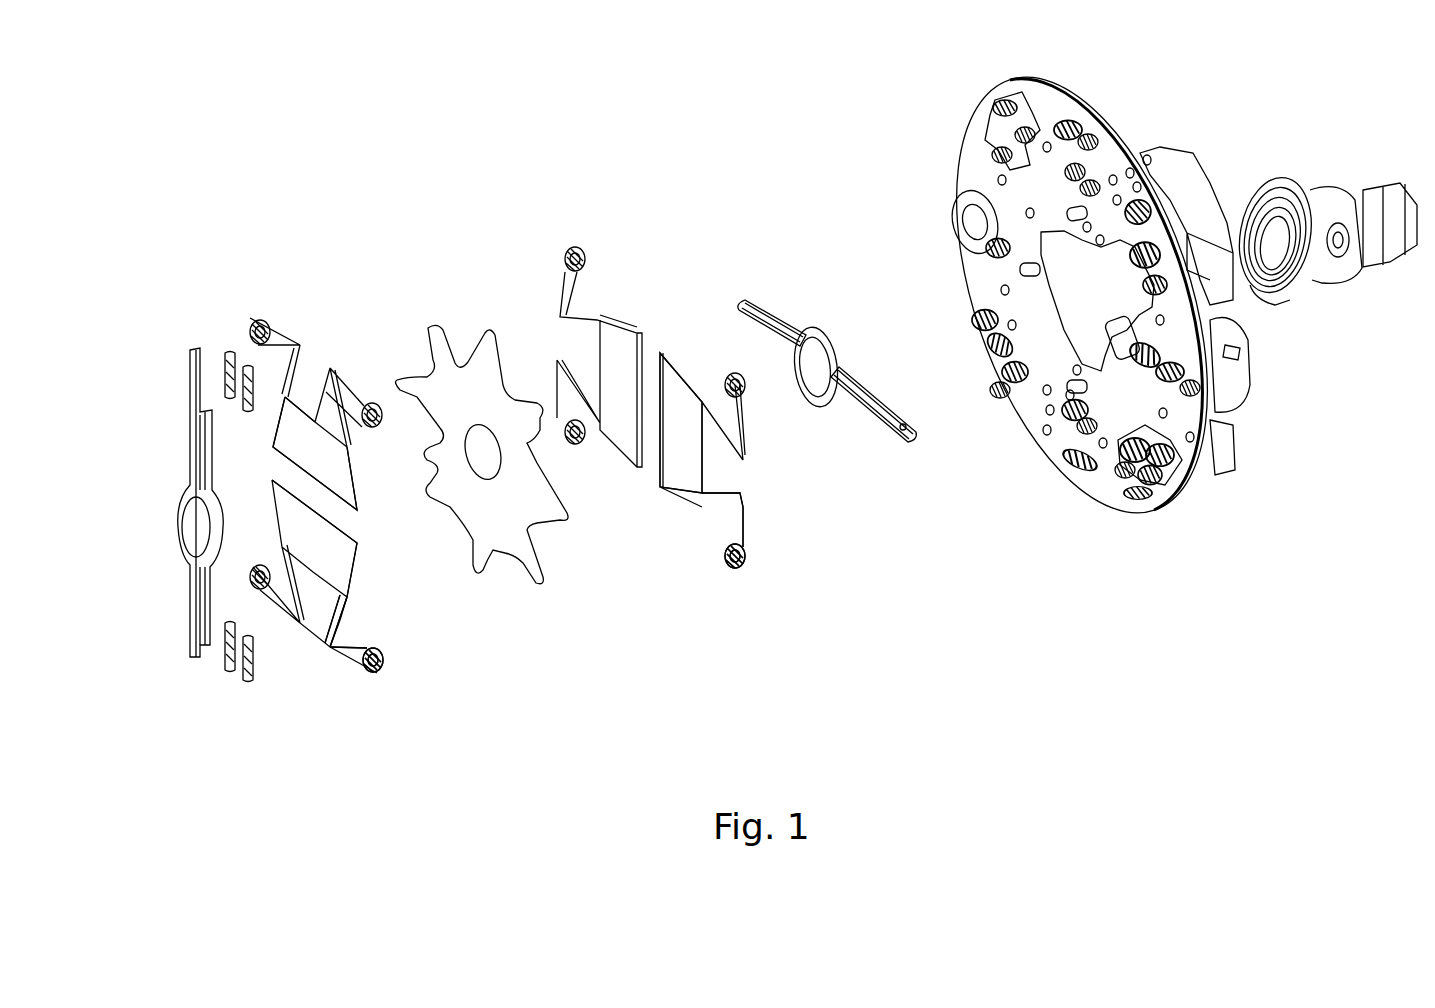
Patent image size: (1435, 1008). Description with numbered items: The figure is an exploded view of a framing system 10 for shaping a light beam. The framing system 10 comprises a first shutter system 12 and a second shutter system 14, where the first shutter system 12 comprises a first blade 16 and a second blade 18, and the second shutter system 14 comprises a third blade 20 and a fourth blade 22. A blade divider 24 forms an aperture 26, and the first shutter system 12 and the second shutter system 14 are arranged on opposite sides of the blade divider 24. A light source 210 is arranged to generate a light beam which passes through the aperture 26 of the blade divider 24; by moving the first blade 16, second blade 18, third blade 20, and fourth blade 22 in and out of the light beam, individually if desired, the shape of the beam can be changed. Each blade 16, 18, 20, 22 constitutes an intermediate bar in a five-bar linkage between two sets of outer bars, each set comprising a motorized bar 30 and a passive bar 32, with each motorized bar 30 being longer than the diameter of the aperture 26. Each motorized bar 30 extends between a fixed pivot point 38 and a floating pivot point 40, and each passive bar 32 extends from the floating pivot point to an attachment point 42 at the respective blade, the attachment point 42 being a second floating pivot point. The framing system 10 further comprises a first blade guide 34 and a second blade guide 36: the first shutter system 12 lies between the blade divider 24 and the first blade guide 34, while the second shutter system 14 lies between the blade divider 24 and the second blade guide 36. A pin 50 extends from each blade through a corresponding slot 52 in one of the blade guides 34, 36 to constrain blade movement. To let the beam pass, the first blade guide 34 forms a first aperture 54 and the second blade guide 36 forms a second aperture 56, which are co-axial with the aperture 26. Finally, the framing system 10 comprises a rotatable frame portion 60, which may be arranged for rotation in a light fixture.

The framing system 10 is at (905, 678).
The first shutter system 12 is at (270, 252).
The second shutter system 14 is at (675, 312).
The first blade 16 is at (330, 463).
The second blade 18 is at (330, 560).
The third blade 20 is at (681, 400).
The fourth blade 22 is at (627, 432).
The blade divider 24 is at (477, 370).
The aperture 26 is at (490, 465).
The motorized bar 30 is at (350, 657).
The passive bar 32 is at (345, 620).
The first blade guide 34 is at (190, 410).
The second blade guide 36 is at (757, 307).
The fixed pivot point 38 is at (376, 670).
The floating pivot point 40 is at (328, 650).
The attachment point 42 is at (345, 598).
The pin 50 is at (315, 422).
The slot 52 is at (197, 470).
The first aperture 54 is at (202, 537).
The second aperture 56 is at (827, 367).
The rotatable frame portion 60 is at (1165, 493).
The light source 210 is at (1338, 238).